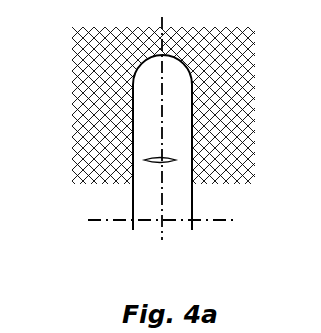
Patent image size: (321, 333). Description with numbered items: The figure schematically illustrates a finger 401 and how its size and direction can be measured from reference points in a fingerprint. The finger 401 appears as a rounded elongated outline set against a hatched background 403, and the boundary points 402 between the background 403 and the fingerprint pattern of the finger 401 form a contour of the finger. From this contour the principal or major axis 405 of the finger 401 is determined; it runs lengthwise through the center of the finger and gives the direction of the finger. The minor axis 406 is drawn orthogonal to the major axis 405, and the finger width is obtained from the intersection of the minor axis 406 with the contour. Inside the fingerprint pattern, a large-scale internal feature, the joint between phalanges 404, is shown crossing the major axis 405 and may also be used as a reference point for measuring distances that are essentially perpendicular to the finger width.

The finger 401 is at (133, 200).
The boundary points 402 is at (192, 97).
The background 403 is at (86, 60).
The joint between phalanges 404 is at (176, 162).
The major axis 405 is at (162, 246).
The minor axis 406 is at (100, 221).